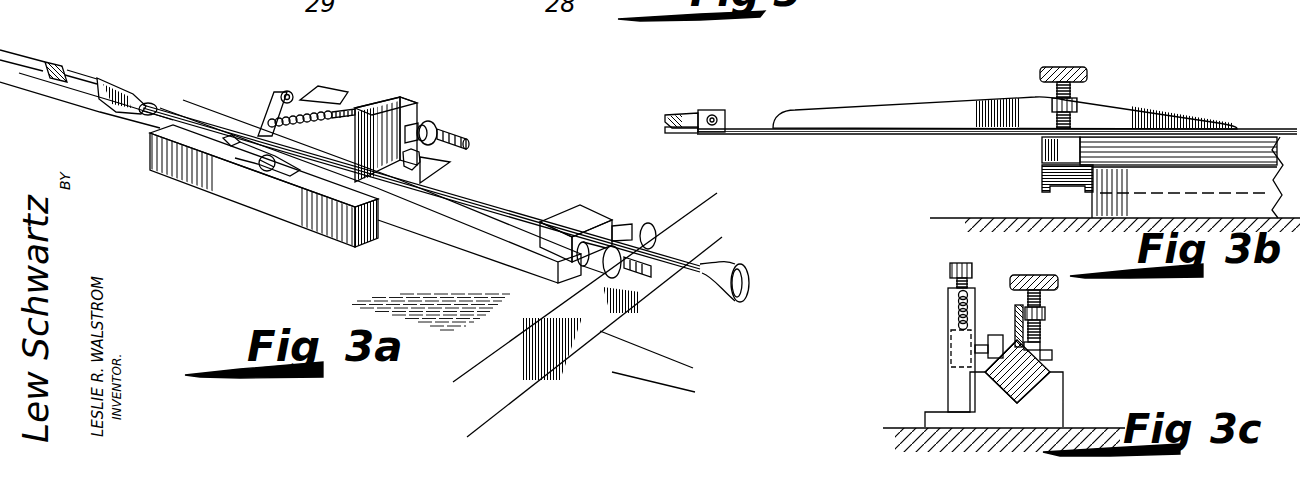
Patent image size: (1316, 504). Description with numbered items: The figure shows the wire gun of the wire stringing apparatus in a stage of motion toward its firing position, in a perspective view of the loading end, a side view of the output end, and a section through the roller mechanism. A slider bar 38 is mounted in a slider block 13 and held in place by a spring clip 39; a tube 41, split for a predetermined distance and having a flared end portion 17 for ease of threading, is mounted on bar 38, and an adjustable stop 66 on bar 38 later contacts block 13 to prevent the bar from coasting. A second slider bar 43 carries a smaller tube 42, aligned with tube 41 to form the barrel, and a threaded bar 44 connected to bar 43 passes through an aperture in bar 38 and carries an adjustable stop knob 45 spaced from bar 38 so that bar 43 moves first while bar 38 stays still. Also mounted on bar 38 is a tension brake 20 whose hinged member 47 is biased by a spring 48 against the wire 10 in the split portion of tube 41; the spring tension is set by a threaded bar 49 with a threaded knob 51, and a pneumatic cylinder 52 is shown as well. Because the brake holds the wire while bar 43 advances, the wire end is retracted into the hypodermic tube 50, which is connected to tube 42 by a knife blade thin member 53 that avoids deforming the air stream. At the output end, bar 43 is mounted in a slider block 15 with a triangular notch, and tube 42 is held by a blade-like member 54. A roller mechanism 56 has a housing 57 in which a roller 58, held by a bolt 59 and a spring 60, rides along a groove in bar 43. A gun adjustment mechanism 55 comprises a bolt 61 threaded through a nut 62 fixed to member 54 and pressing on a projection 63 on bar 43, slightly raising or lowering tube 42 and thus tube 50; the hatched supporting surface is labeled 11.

In FIG. 3A, the wire 10 is at (97, 80).
In FIG. 3B, the wire 10 is at (688, 133).
In FIG. 3A, the supporting surface 11 is at (540, 378).
In FIG. 3B, the supporting surface 11 is at (1115, 208).
In FIG. 3C, the supporting surface 11 is at (900, 427).
In FIG. 3A, the slider block 13 is at (150, 160).
In FIG. 3B, the slider block 15 is at (1092, 203).
In FIG. 3A, the flared end portion 17 is at (734, 302).
In FIG. 3A, the tension brake 20 is at (436, 100).
In FIG. 3A, the slider bar 38 is at (512, 265).
In FIG. 3A, the spring clip 39 is at (278, 182).
In FIG. 3A, the tube 41 is at (187, 110).
In FIG. 3A, the tube 42 is at (47, 62).
In FIG. 3B, the tube 42 is at (752, 129).
In FIG. 3C, the tube 42 is at (1052, 355).
In FIG. 3A, the slider bar 43 is at (90, 110).
In FIG. 3B, the slider bar 43 is at (1042, 177).
In FIG. 3C, the slider bar 43 is at (1060, 367).
In FIG. 3A, the threaded bar 44 is at (158, 114).
In FIG. 3A, the adjustable stop knob 45 is at (607, 280).
In FIG. 3A, the hinged member 47 is at (273, 110).
In FIG. 3A, the spring 48 is at (310, 110).
In FIG. 3A, the threaded bar 49 is at (462, 143).
In FIG. 3B, the hypodermic tube 50 is at (672, 133).
In FIG. 3A, the threaded knob 51 is at (433, 124).
In FIG. 3A, the pneumatic cylinder 52 is at (363, 123).
In FIG. 3B, the knife blade thin member 53 is at (688, 113).
In FIG. 3B, the blade-like member 54 is at (802, 113).
In FIG. 3C, the blade-like member 54 is at (1017, 306).
In FIG. 3B, the gun adjustment mechanism 55 is at (1036, 60).
In FIG. 3C, the roller mechanism 56 is at (938, 272).
In FIG. 3C, the housing 57 is at (948, 293).
In FIG. 3C, the roller 58 is at (990, 337).
In FIG. 3C, the bolt 59 is at (960, 263).
In FIG. 3C, the spring 60 is at (957, 313).
In FIG. 3B, the bolt 61 is at (1058, 66).
In FIG. 3C, the bolt 61 is at (1029, 276).
In FIG. 3B, the threaded nut 62 is at (1077, 105).
In FIG. 3C, the threaded nut 62 is at (1047, 313).
In FIG. 3B, the projection 63 is at (1042, 152).
In FIG. 3C, the projection 63 is at (1032, 348).
In FIG. 3A, the adjustable stop 66 is at (590, 212).